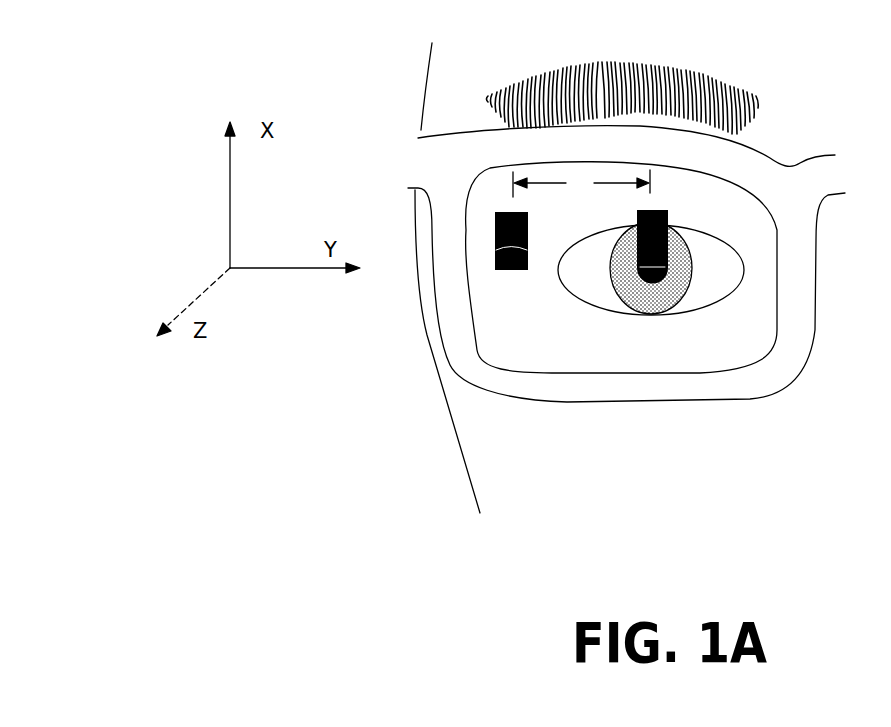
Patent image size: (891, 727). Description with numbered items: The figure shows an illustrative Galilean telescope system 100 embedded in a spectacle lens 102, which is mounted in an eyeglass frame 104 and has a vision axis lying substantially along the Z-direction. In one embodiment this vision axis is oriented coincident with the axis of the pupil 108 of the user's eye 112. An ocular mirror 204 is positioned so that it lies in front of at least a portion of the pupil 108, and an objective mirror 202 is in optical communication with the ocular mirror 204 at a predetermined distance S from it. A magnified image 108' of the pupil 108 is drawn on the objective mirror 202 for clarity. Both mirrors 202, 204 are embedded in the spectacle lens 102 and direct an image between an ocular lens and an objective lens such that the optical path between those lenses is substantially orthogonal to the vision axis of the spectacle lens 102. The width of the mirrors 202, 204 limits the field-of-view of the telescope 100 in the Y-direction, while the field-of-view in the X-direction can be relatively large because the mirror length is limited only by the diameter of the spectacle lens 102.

The Galilean telescope system 100 is at (670, 203).
The spectacle lens 102 is at (582, 350).
The eyeglass frame 104 is at (800, 242).
The pupil 108 is at (676, 268).
The magnified image of the pupil 108' is at (512, 261).
The user's eye 112 is at (612, 292).
The objective mirror 202 is at (482, 247).
The ocular mirror 204 is at (676, 253).